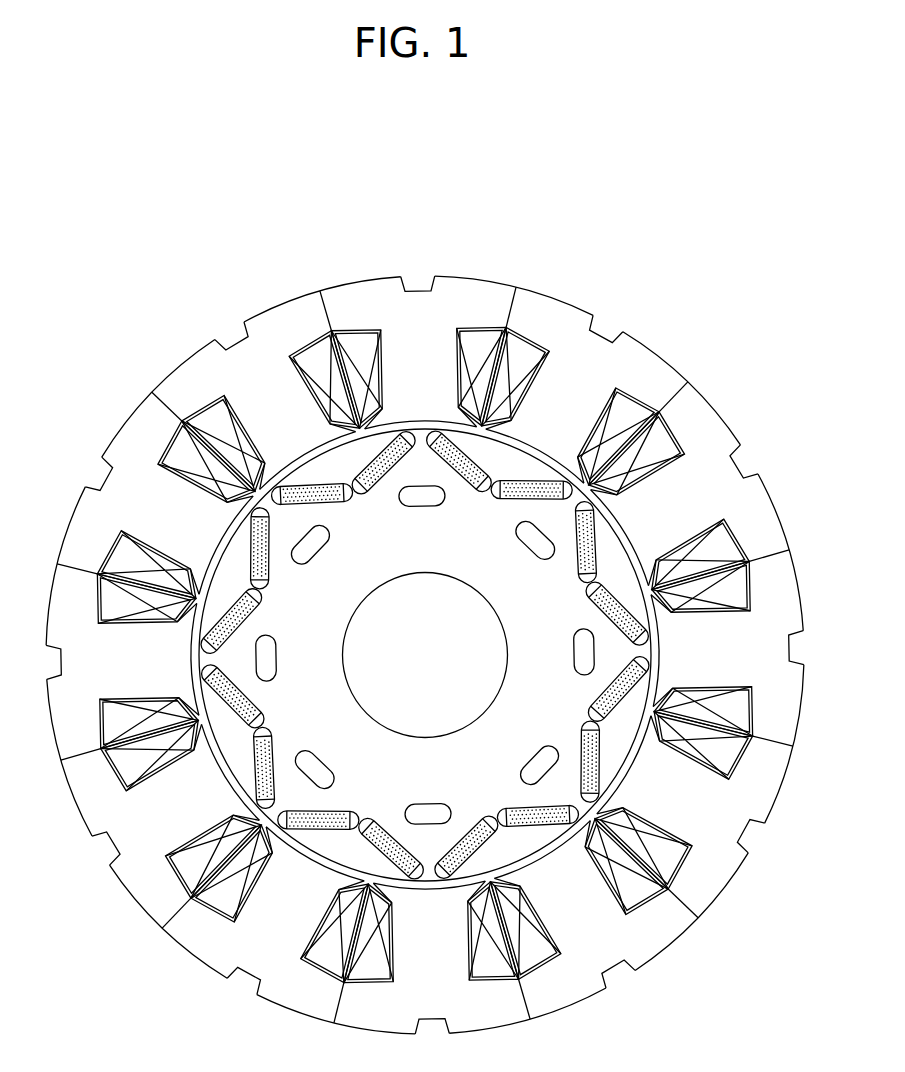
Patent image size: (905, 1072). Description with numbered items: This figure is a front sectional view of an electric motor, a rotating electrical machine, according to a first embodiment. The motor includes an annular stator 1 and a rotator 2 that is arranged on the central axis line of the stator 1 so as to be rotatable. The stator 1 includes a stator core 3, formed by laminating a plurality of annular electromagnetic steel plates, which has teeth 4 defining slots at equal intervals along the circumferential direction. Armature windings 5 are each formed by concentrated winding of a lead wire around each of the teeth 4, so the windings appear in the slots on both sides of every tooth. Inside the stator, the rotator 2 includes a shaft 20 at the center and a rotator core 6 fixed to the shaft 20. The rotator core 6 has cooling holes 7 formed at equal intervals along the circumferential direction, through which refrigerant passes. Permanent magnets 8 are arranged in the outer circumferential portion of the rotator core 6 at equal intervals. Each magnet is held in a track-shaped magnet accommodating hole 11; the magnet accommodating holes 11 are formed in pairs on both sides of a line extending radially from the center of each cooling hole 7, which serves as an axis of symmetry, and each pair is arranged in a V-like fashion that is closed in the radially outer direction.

The stator 1 is at (700, 430).
The rotator 2 is at (367, 540).
The stator core 3 is at (708, 507).
The teeth 4 is at (555, 396).
The armature windings 5 is at (723, 593).
The rotator core 6 is at (533, 690).
The cooling holes 7 is at (268, 643).
The permanent magnets 8 is at (262, 542).
The magnet accommodating holes 11 is at (600, 772).
The shaft 20 is at (450, 637).